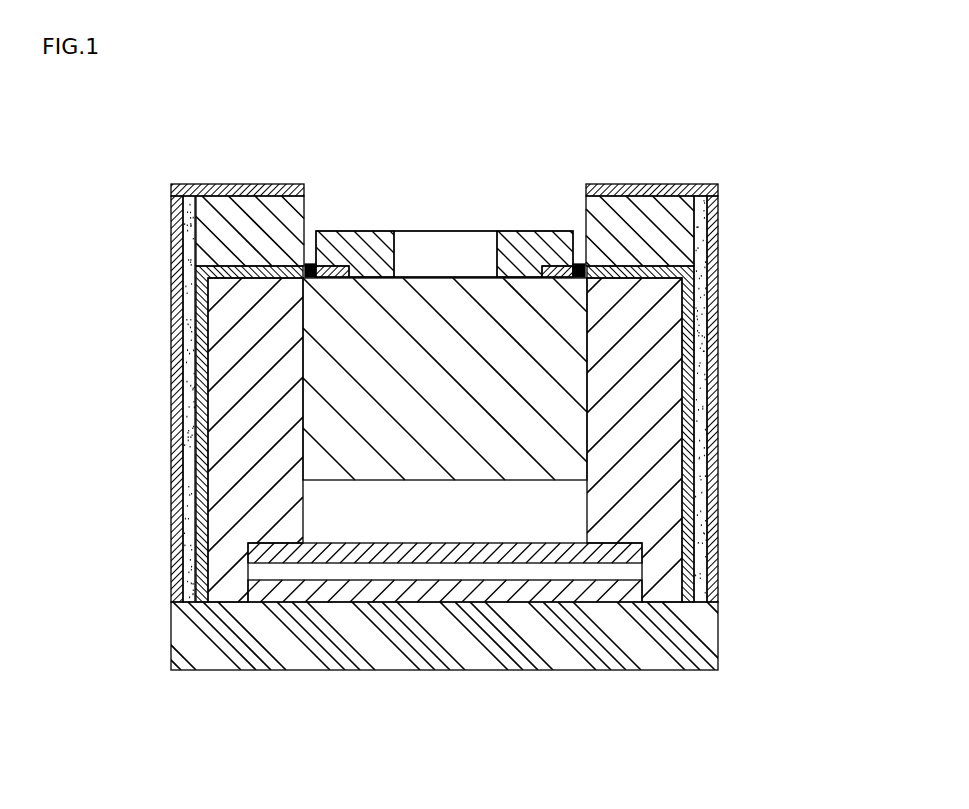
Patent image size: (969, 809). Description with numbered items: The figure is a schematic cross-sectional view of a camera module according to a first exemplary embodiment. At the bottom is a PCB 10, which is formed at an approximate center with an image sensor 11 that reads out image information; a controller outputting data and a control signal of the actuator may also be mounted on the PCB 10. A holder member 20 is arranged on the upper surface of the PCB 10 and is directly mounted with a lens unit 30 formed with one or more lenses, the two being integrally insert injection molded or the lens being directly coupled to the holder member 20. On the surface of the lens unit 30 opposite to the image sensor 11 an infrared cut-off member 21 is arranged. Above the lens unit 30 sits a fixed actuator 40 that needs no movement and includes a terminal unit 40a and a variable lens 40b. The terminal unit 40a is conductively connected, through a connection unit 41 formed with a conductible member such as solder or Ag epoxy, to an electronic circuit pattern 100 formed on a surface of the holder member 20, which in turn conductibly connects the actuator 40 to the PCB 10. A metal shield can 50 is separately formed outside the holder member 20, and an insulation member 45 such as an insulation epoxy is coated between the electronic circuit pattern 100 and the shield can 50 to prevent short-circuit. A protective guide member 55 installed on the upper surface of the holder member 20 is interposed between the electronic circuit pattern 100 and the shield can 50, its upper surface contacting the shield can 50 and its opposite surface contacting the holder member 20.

The PCB 10 is at (375, 647).
The image sensor 11 is at (512, 588).
The holder member 20 is at (220, 552).
The infrared cut-off member 21 is at (612, 553).
The lens unit 30 is at (552, 368).
The actuator 40 is at (444, 180).
The terminal unit 40a is at (340, 266).
The variable lens 40b is at (455, 245).
The connection unit 41 is at (309, 265).
The insulation member 45 is at (188, 298).
The shield can 50 is at (630, 186).
The protective guide member 55 is at (228, 222).
The electronic circuit pattern 100 is at (207, 472).